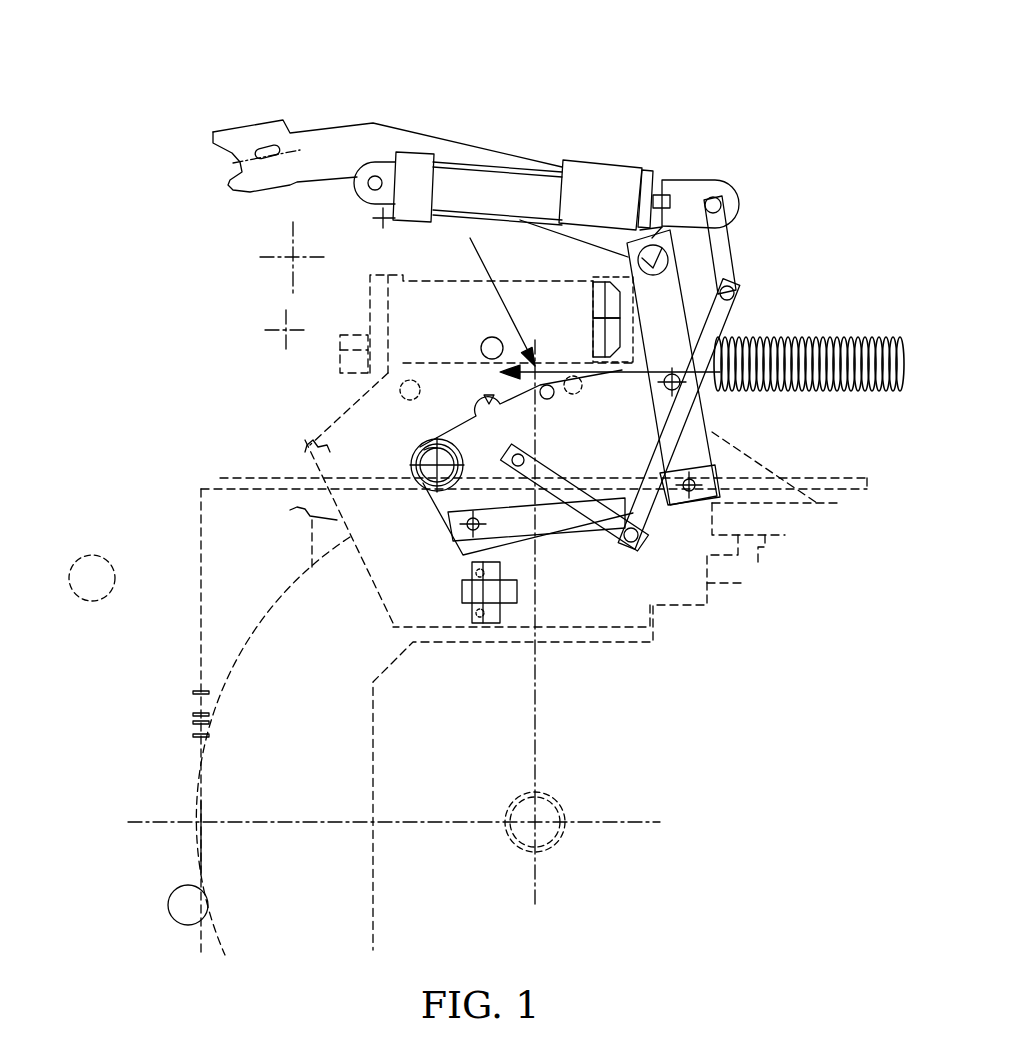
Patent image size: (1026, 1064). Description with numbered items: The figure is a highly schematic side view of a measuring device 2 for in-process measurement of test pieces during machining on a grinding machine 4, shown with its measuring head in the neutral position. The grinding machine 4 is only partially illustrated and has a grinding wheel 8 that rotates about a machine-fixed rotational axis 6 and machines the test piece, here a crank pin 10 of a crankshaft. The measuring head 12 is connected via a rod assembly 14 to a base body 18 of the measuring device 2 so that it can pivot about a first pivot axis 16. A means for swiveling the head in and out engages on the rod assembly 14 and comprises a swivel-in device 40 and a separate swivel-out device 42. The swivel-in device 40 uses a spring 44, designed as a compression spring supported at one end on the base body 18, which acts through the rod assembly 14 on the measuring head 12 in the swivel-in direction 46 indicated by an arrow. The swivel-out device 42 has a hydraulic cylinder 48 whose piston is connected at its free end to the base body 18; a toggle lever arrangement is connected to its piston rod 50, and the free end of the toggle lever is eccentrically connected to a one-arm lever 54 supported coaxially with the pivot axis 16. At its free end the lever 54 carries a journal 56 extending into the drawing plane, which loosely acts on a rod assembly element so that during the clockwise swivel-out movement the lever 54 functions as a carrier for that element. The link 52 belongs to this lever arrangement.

The measuring device 2 is at (618, 84).
The grinding machine 4 is at (178, 615).
The rotational axis 6 is at (540, 815).
The grinding wheel 8 is at (265, 625).
The crank pin 10 is at (176, 902).
The measuring head 12 is at (305, 106).
The rod assembly 14 is at (556, 550).
The first pivot axis 16 is at (420, 460).
The base body 18 is at (345, 433).
The swivel-in device 40 is at (784, 325).
The swivel-out device 42 is at (708, 122).
The spring 44 is at (860, 342).
The swivel-in direction 46 is at (125, 282).
The hydraulic cylinder 48 is at (530, 160).
The piston rod 50 is at (728, 200).
The connecting link 52 is at (713, 418).
The one-arm lever 54 is at (470, 430).
The journal 56 is at (552, 385).